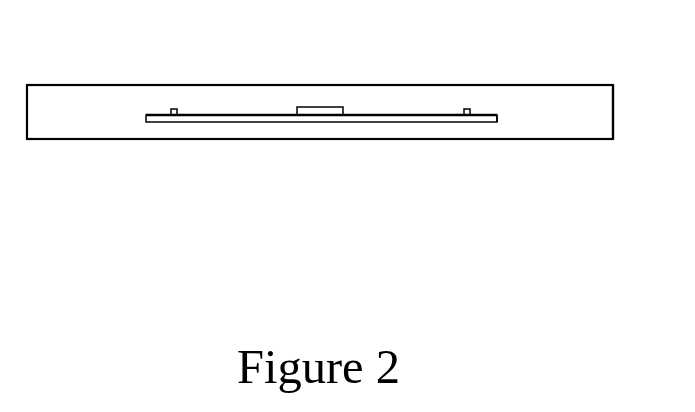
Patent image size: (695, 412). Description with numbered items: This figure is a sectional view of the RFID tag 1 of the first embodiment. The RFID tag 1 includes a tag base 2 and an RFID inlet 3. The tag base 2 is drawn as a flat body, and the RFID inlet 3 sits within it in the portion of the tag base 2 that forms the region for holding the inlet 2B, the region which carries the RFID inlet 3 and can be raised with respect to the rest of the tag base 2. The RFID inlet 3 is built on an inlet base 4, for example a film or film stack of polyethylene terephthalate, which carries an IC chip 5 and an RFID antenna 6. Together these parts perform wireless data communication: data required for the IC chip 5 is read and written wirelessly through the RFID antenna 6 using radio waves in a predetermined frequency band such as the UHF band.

The RFID tag 1 is at (553, 83).
The tag base 2 is at (613, 116).
The region for holding the inlet 2B is at (63, 83).
The RFID inlet 3 is at (502, 112).
The inlet base 4 is at (263, 119).
The IC chip 5 is at (315, 107).
The RFID antenna 6 is at (174, 109).